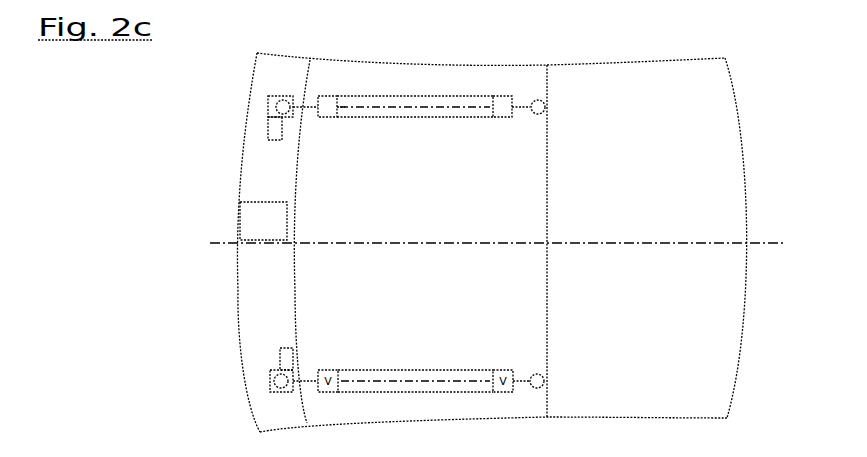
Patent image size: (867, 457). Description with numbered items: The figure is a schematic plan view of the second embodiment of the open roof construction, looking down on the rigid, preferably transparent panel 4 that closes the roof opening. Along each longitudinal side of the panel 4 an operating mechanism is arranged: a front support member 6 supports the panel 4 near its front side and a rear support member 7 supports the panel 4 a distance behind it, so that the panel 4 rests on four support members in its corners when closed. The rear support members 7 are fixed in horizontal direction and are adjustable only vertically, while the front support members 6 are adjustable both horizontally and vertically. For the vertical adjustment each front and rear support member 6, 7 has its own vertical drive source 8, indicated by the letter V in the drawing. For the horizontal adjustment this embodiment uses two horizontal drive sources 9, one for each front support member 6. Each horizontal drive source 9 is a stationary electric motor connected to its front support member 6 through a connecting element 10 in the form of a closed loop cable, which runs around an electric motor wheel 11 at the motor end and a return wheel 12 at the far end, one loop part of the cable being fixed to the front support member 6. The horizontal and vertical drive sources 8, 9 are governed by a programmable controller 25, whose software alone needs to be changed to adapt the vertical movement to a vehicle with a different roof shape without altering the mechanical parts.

The panel 4 is at (430, 226).
The front support member 6 is at (327, 95).
The rear support member 7 is at (504, 96).
The vertical drive source 8 is at (340, 107).
The horizontal drive source 9 is at (272, 123).
The connecting element 10 is at (460, 97).
The electric motor wheel 11 is at (286, 100).
The return wheel 12 is at (538, 101).
The programmable controller 25 is at (263, 221).